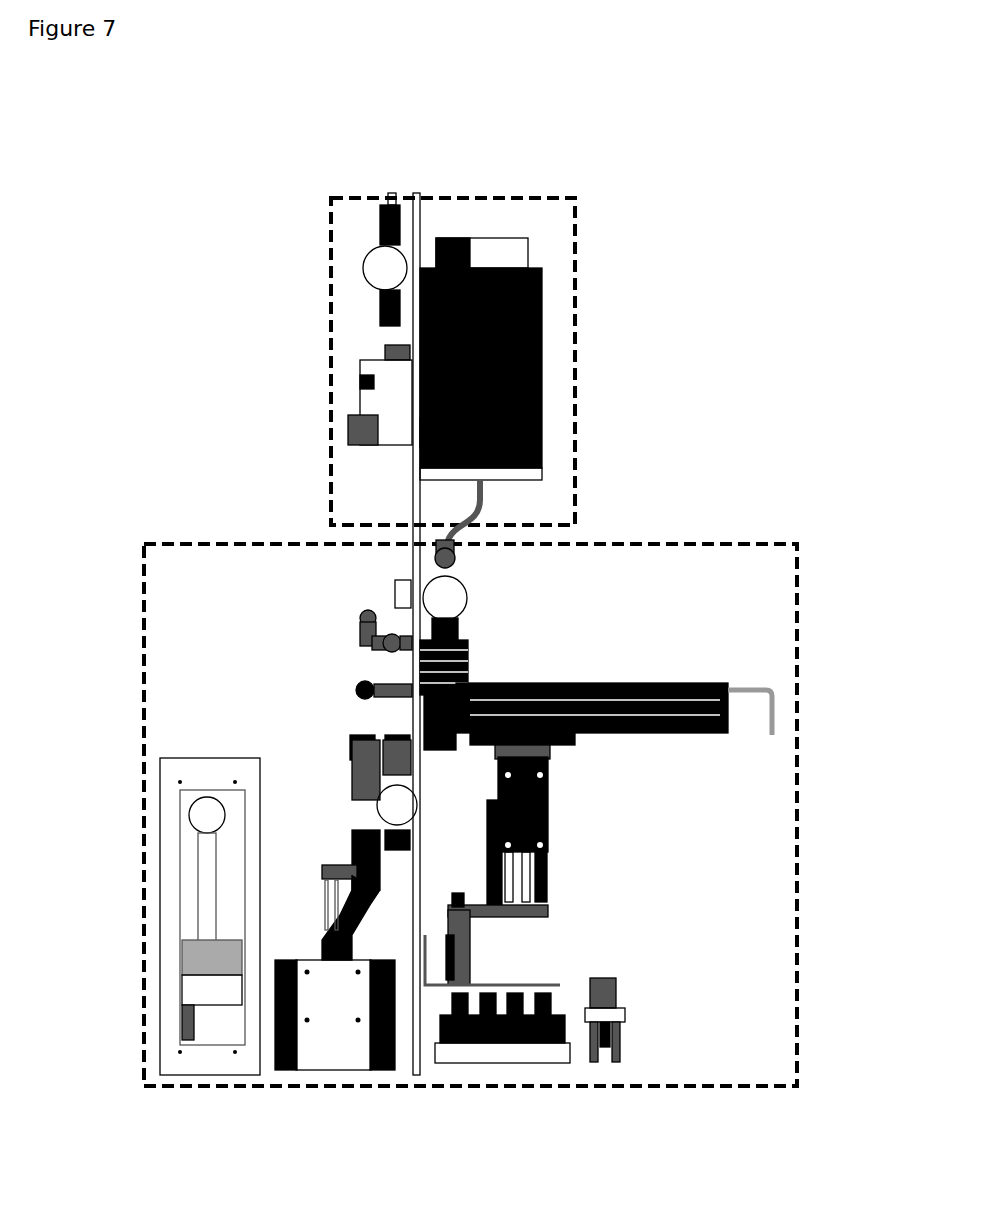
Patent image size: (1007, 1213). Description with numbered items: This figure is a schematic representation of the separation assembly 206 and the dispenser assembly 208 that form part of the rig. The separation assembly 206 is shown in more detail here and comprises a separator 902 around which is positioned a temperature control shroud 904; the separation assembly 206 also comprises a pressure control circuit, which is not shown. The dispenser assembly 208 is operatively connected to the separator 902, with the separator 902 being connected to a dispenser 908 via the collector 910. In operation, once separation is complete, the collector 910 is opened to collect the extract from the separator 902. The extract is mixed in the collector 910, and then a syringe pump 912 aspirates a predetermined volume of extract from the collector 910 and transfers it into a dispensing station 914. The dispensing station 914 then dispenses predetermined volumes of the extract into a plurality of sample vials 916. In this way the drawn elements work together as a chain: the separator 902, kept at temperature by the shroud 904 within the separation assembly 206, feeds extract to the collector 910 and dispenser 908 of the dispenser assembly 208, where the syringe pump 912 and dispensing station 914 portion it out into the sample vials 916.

The separation assembly 206 is at (583, 222).
The dispenser assembly 208 is at (247, 1100).
The separator 902 is at (470, 246).
The temperature control shroud 904 is at (493, 393).
The dispenser 908 is at (728, 847).
The collector 910 is at (437, 657).
The syringe pump 912 is at (165, 807).
The dispensing station 914 is at (475, 947).
The sample vials 916 is at (500, 1035).